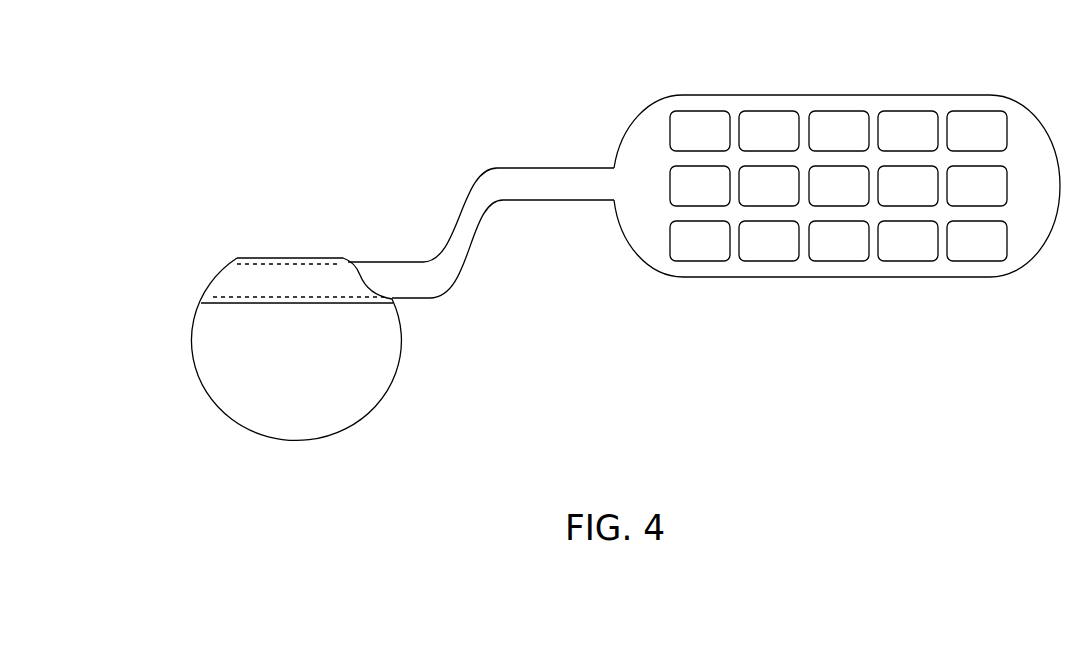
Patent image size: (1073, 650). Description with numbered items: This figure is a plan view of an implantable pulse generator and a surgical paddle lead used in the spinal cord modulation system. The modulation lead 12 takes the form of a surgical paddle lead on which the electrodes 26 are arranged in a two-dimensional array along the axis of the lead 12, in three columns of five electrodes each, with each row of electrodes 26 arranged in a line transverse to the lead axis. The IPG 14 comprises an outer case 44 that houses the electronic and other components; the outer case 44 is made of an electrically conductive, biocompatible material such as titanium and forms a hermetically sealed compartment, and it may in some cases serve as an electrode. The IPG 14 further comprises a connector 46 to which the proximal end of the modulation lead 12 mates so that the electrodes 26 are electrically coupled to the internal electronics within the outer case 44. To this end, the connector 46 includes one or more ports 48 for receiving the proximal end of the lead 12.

The modulation lead 12 is at (467, 171).
The implantable pulse generator 14 is at (237, 227).
The electrodes 26 is at (833, 110).
The outer case 44 is at (403, 340).
The connector 46 is at (300, 258).
The ports 48 is at (263, 260).